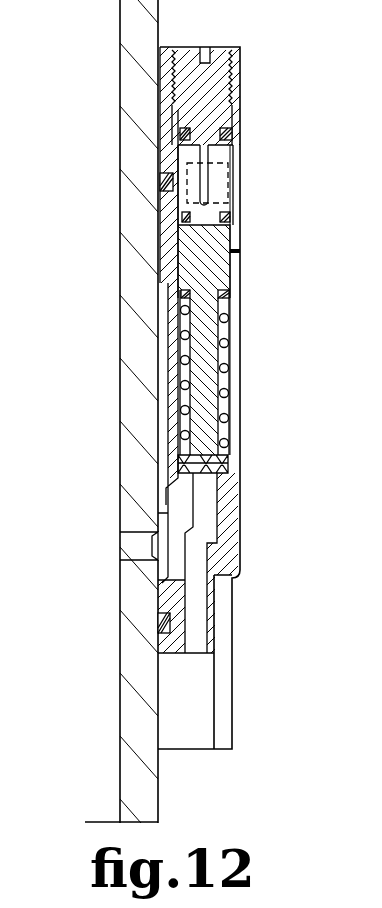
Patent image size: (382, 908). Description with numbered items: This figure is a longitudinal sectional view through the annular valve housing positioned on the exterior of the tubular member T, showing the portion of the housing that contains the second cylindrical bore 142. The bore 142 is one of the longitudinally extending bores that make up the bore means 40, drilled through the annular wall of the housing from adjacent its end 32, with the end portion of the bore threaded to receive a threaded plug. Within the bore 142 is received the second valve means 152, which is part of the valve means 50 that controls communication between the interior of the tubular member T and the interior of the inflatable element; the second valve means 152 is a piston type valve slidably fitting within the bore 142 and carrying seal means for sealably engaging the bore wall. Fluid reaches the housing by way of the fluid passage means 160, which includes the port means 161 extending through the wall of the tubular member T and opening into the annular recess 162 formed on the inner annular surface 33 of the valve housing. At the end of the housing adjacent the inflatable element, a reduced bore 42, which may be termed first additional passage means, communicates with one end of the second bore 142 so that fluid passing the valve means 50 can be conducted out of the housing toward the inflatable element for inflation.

The tubular member T is at (120, 272).
The end 32 is at (221, 47).
The inner annular surface 33 is at (158, 128).
The bore means 40 is at (238, 226).
The valve means 50 is at (236, 249).
The second cylindrical bore 142 is at (229, 315).
The second valve means 152 is at (213, 345).
The annular recess 162 is at (165, 419).
The port means 161 is at (133, 537).
The fluid passage means 160 is at (112, 553).
The reduced bore 42 is at (208, 505).